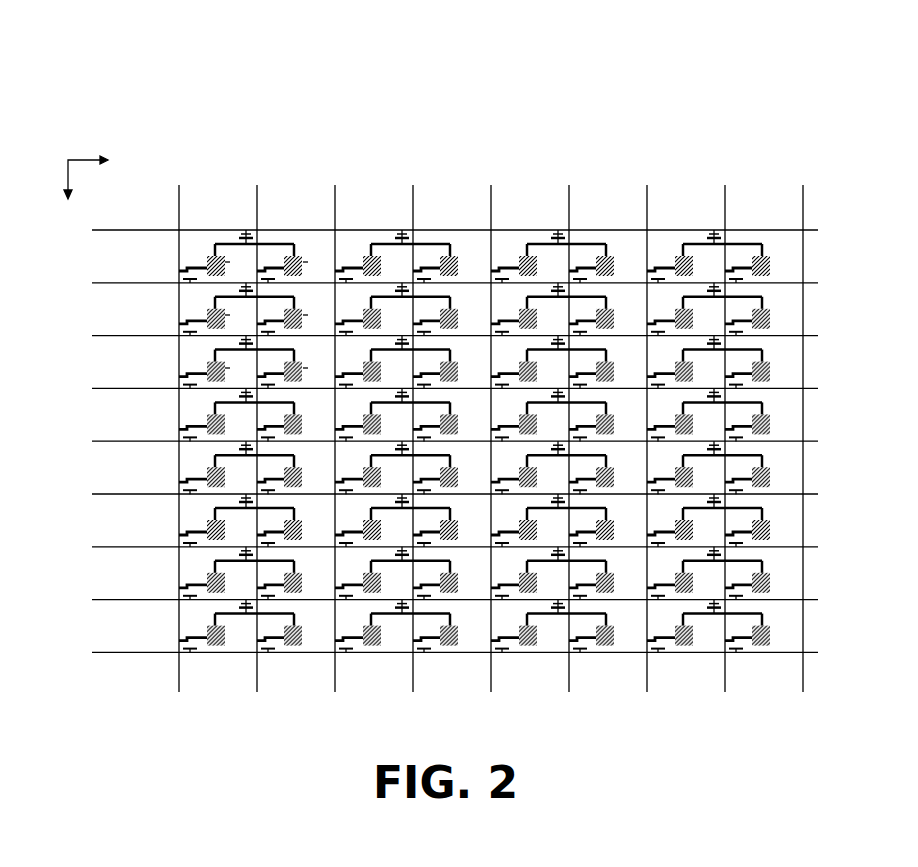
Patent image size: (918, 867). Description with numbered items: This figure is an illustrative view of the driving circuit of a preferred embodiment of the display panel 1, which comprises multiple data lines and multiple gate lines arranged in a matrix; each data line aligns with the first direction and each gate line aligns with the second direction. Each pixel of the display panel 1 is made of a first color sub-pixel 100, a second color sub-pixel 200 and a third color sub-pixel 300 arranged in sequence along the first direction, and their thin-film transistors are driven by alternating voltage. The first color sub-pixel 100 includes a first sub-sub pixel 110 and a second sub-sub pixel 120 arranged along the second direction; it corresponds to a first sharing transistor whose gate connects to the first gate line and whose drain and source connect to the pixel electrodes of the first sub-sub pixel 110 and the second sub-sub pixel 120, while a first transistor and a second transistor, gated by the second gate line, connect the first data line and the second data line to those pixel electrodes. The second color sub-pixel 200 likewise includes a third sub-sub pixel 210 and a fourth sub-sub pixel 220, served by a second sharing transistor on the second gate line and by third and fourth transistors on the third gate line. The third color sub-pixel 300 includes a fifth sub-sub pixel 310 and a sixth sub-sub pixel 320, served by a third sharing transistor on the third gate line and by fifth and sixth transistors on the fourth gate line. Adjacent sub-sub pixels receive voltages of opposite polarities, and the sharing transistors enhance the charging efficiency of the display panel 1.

The display panel 1 is at (452, 24).
The first color sub-pixel 100 is at (93, 245).
The first sub-sub pixel 110 is at (185, 256).
The second sub-sub pixel 120 is at (253, 275).
The second color sub-pixel 200 is at (93, 297).
The third sub-sub pixel 210 is at (185, 309).
The fourth sub-sub pixel 220 is at (253, 328).
The third color sub-pixel 300 is at (93, 349).
The fifth sub-sub pixel 310 is at (185, 361).
The sixth sub-sub pixel 320 is at (253, 381).